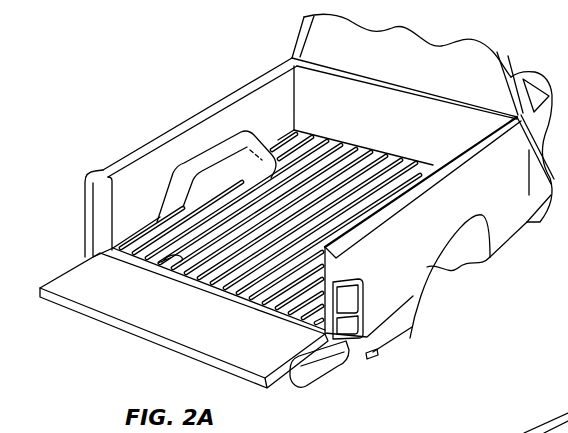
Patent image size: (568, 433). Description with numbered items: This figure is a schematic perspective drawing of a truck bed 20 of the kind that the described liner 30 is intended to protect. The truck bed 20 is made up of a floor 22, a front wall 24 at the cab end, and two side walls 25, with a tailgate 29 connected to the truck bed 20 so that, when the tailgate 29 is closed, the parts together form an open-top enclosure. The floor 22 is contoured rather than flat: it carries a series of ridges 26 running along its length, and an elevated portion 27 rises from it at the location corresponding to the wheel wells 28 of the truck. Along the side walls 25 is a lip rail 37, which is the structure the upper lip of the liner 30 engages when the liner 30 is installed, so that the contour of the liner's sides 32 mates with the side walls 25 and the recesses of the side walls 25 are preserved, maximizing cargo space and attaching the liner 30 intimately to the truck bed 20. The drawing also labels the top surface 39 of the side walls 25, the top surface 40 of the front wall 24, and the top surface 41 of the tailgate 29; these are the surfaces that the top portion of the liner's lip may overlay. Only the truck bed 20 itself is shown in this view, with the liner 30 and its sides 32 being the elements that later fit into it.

In FIG. 2A, the truck bed 20 is at (140, 46).
In FIG. 2A, the floor 22 is at (335, 148).
In FIG. 2A, the front wall 24 is at (283, 73).
In FIG. 2A, the side walls 25 is at (117, 192).
In FIG. 2A, the ridges 26 is at (160, 261).
In FIG. 2A, the elevated portion 27 is at (212, 158).
In FIG. 2A, the wheel wells 28 is at (467, 252).
In FIG. 2A, the tailgate 29 is at (78, 277).
In FIG. 2A, the lip rail 37 is at (218, 110).
In FIG. 2A, the top surface of side walls 39 is at (243, 92).
In FIG. 2A, the top surface of front wall 40 is at (397, 92).
In FIG. 2A, the top surface of tailgate 41 is at (135, 330).
In FIG. 2B, the sides 32 is at (520, 430).
In FIG. 2B, the liner 30 is at (372, 430).